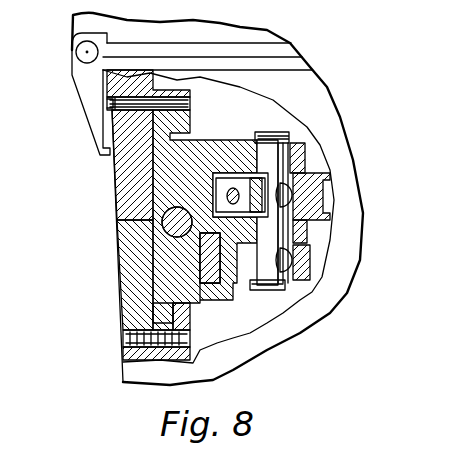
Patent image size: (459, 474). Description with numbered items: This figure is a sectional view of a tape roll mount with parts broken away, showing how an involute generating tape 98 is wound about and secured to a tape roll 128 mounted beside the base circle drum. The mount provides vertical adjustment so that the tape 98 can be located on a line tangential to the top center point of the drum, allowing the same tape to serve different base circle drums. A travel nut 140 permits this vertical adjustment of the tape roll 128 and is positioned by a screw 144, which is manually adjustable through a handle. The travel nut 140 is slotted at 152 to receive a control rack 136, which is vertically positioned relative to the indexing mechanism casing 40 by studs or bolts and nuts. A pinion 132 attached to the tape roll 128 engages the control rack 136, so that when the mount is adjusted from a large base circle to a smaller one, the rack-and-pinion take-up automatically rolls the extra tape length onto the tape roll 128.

The indexing mechanism casing 40 is at (127, 310).
The involute generating tape 98 is at (242, 183).
The tape roll 128 is at (317, 197).
The pinion 132 is at (298, 288).
The control rack 136 is at (233, 285).
The travel nut 140 is at (163, 273).
The screw 144 is at (163, 220).
The slot 152 is at (212, 283).